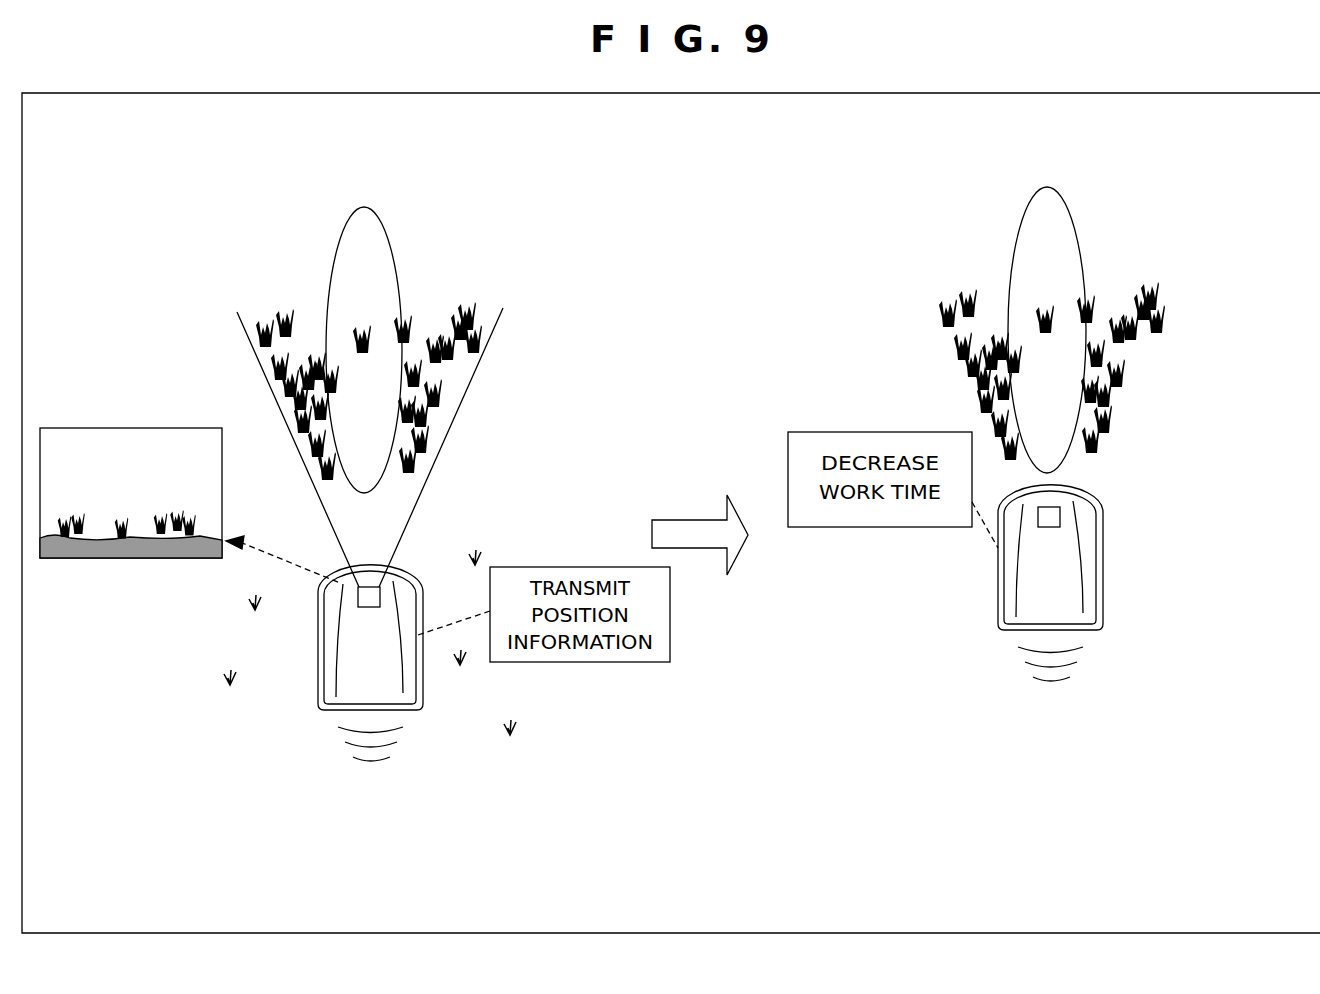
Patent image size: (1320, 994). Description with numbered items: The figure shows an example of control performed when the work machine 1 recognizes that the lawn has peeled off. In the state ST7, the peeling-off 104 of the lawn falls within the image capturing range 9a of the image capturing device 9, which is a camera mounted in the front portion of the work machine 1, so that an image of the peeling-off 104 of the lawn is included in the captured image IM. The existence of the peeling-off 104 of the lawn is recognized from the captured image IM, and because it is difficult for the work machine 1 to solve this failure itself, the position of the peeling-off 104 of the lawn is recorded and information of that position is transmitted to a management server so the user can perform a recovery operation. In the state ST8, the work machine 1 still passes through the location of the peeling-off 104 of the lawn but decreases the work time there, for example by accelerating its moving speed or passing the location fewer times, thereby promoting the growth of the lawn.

The work machine 1 is at (328, 712).
The image capturing device 9 is at (369, 607).
The image capturing range 9a is at (455, 418).
The peeling-off of the lawn 104 is at (397, 250).
The captured image IM is at (122, 427).
The state ST7 is at (371, 822).
The state ST8 is at (1047, 830).